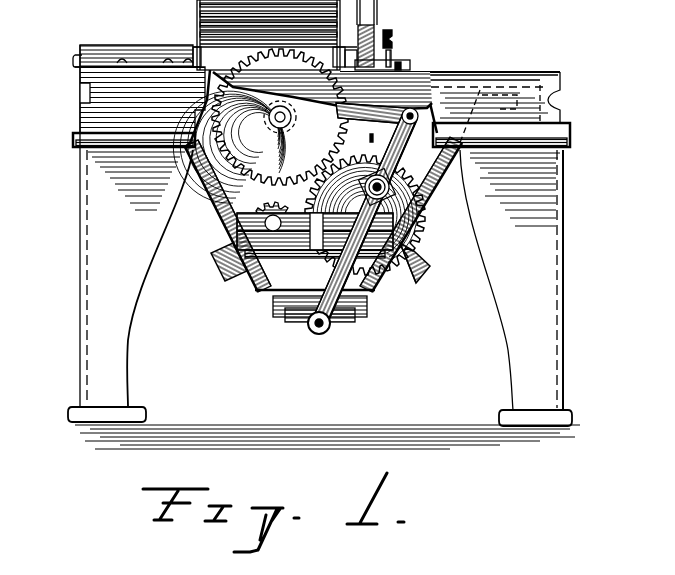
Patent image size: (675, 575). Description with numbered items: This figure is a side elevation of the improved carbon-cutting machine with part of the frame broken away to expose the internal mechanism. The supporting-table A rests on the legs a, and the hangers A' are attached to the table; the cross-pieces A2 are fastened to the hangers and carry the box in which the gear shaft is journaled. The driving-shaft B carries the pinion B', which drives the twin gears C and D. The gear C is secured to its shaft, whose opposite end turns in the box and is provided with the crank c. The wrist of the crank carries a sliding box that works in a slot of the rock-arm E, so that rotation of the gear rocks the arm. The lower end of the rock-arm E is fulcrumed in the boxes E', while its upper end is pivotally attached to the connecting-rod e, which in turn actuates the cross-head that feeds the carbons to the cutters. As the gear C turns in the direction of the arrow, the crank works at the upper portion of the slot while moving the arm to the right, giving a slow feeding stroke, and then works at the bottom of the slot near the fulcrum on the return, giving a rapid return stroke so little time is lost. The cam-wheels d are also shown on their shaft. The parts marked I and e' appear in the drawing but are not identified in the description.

The spindle shaft I is at (372, 36).
The supporting-table A is at (408, 149).
The legs a is at (320, 286).
The twin gear D is at (260, 126).
The cam-wheels d is at (287, 119).
The twin gear C is at (360, 222).
The crank c is at (426, 228).
The driving-shaft B is at (315, 247).
The pinion B' is at (257, 221).
The hangers A' is at (225, 181).
The cross-pieces A2 is at (424, 270).
The rock-arm E is at (373, 214).
The connecting-rod e is at (368, 129).
The pivot e' is at (379, 192).
The boxes E' is at (327, 333).